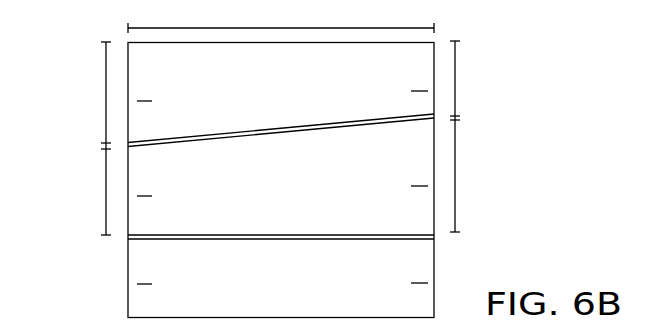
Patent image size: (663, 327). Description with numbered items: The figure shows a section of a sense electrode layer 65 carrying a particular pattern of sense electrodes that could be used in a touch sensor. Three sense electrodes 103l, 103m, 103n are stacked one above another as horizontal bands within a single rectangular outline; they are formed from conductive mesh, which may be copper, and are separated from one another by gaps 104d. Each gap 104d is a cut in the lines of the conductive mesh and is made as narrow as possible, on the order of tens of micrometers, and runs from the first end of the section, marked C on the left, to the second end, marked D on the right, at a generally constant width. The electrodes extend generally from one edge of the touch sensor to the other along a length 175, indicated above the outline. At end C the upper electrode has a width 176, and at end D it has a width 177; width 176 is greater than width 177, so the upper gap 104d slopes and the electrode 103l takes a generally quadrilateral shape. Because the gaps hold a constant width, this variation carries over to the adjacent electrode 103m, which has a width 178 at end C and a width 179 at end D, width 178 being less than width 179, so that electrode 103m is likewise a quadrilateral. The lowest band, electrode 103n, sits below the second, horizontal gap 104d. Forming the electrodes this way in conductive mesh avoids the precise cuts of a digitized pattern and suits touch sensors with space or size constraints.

The sense electrode layer 65 is at (518, 211).
The sense electrode 103l is at (152, 64).
The sense electrode 103m is at (150, 213).
The sense electrode 103n is at (147, 296).
The gap 104d is at (434, 117).
The length 175 is at (281, 17).
The width 176 is at (85, 94).
The width 177 is at (475, 79).
The width 178 is at (85, 190).
The width 179 is at (475, 175).